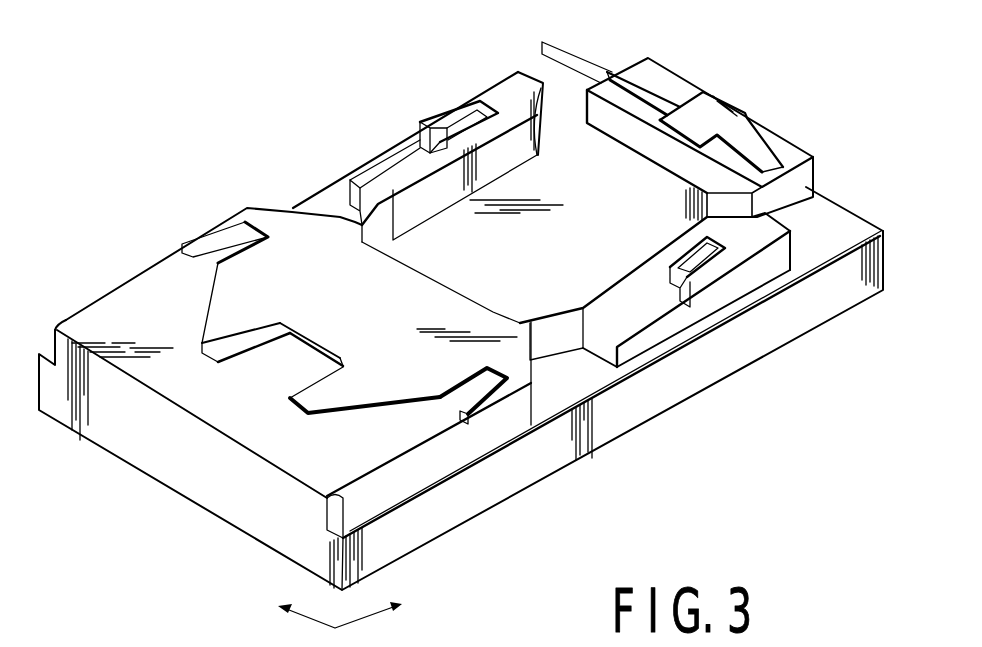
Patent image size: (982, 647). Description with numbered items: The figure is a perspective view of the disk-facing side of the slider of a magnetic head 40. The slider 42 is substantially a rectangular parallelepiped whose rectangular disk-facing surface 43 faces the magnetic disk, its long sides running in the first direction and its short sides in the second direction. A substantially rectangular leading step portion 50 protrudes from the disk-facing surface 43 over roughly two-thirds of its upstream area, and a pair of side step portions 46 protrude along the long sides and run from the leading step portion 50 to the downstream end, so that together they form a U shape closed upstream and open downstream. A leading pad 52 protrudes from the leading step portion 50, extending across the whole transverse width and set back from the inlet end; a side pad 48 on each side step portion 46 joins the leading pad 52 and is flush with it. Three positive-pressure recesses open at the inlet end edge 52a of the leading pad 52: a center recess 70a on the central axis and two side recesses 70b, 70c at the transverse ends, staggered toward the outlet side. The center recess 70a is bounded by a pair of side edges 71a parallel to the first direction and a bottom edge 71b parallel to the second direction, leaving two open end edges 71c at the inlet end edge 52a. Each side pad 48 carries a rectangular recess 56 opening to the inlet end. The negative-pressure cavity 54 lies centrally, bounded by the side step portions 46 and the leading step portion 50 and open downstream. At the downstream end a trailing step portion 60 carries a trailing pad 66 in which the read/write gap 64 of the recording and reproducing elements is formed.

The magnetic head 40 is at (660, 425).
The slider 42 is at (136, 461).
The disk-facing surface 43 is at (842, 217).
The side step portions 46 is at (413, 153).
The side pad 48 is at (510, 83).
The leading step portion 50 is at (83, 313).
The leading pad 52 is at (220, 305).
The inlet end edge 52a is at (345, 413).
The negative-pressure cavity 54 is at (453, 233).
The recess 56 is at (450, 110).
The trailing step portion 60 is at (600, 93).
The read/write gap 64 is at (733, 103).
The trailing pad 66 is at (680, 93).
The center recess 70a is at (270, 378).
The side recess 70b is at (230, 243).
The side recess 70c is at (460, 412).
The side edges 71a is at (253, 338).
The bottom edge 71b is at (310, 340).
The open end edges 71c is at (217, 362).